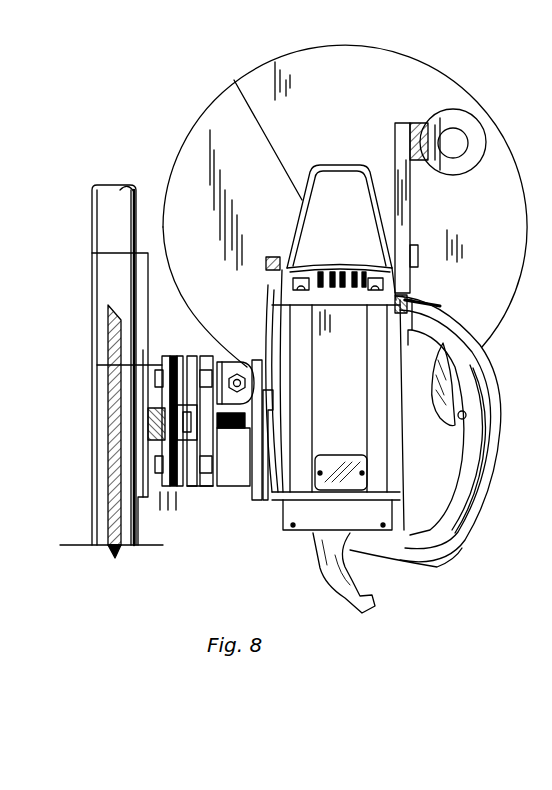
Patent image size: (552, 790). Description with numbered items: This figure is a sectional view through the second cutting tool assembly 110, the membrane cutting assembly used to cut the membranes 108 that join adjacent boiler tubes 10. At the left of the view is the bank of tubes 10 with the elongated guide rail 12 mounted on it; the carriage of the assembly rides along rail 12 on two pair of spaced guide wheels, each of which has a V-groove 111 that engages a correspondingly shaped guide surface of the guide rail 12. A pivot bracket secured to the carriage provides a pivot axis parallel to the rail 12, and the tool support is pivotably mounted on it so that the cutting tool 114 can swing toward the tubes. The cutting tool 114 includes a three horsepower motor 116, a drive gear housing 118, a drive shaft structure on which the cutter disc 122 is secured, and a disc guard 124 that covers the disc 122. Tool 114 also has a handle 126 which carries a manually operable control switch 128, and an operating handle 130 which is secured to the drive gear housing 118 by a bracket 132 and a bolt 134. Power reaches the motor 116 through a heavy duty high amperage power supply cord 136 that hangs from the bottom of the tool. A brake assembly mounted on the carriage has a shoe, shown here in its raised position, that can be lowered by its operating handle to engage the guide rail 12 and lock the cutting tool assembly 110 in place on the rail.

The boiler tubes 10 is at (88, 336).
The guide rail 12 is at (140, 428).
The membranes 108 is at (107, 487).
The second cutting tool assembly 110 is at (440, 623).
The V-groove 111 is at (172, 487).
The cutting tool 114 is at (492, 360).
The motor 116 is at (347, 428).
The drive gear housing 118 is at (318, 238).
The cutter disc 122 is at (187, 152).
The disc guard 124 is at (365, 96).
The handle 126 is at (478, 508).
The control switch 128 is at (455, 430).
The operating handle 130 is at (457, 138).
The bracket 132 is at (412, 225).
The bolt 134 is at (418, 262).
The power supply cord 136 is at (378, 598).